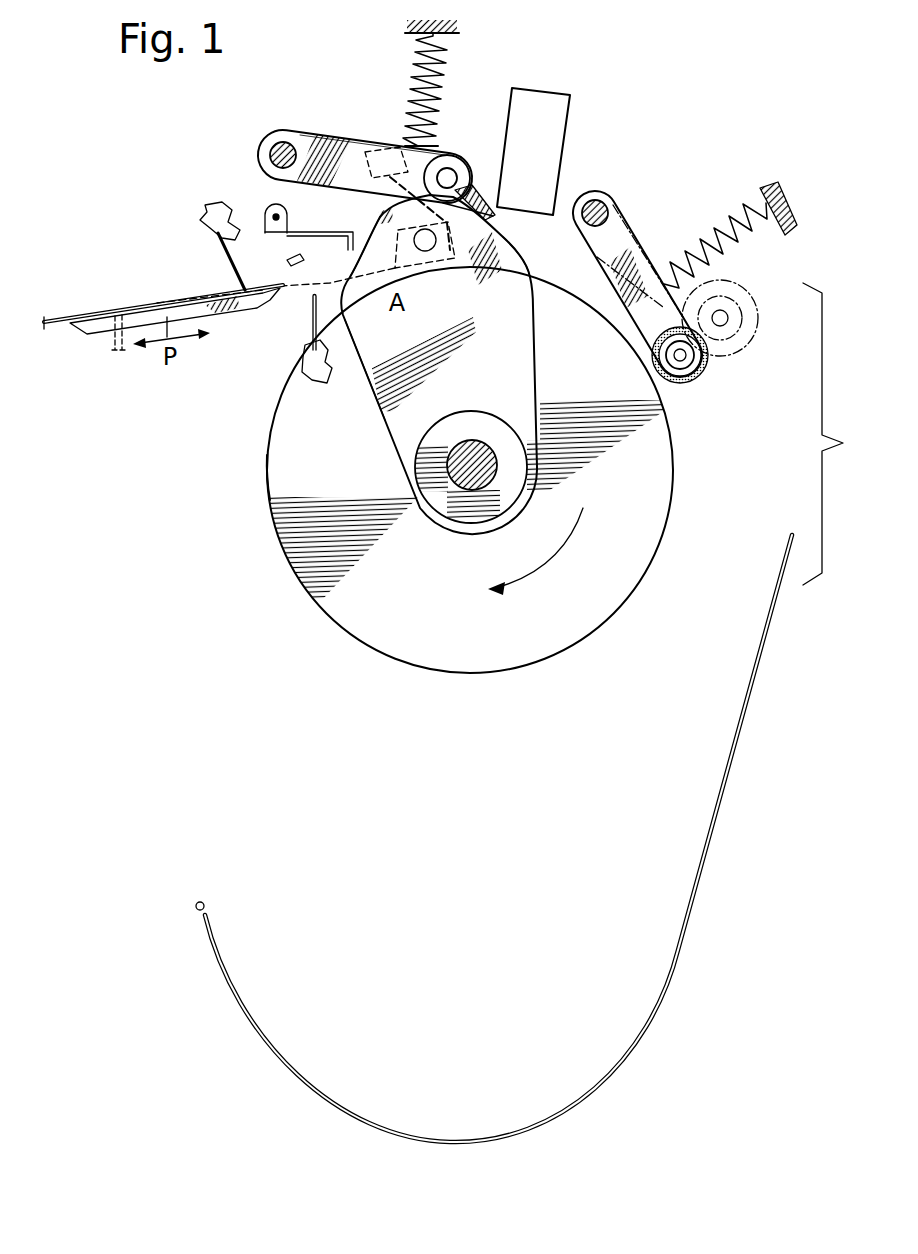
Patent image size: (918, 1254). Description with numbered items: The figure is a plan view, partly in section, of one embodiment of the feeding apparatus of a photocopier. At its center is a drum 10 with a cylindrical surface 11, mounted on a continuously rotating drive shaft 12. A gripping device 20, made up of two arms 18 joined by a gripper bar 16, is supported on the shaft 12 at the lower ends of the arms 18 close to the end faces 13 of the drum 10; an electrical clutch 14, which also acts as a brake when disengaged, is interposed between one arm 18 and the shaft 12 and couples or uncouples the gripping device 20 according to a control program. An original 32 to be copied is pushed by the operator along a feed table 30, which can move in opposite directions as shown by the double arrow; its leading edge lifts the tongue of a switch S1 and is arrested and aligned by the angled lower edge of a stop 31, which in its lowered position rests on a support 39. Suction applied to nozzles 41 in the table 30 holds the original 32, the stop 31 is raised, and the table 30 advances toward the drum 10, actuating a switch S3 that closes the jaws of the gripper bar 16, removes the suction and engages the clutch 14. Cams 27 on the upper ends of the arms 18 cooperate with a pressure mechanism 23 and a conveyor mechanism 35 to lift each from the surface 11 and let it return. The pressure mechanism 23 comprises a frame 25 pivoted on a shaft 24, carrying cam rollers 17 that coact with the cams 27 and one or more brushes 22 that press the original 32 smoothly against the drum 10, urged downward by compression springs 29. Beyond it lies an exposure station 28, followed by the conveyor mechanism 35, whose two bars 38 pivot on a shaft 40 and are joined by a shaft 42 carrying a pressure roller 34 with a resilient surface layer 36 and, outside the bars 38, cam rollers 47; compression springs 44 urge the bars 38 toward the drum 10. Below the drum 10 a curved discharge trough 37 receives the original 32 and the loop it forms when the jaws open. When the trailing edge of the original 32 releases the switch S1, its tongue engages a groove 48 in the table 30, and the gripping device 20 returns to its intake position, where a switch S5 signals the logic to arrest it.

The drum 10 is at (322, 592).
The cylindrical surface 11 is at (266, 481).
The drive shaft 12 is at (452, 452).
The end faces 13 is at (645, 548).
The electrical clutch 14 is at (492, 425).
The gripper bar 16 is at (430, 272).
The cam rollers 17 is at (462, 168).
The arms 18 is at (535, 370).
The gripping device 20 is at (382, 421).
The brushes 22 is at (482, 200).
The pressure mechanism 23 is at (370, 130).
The shaft 24 is at (272, 143).
The frame 25 is at (318, 138).
The cams 27 is at (372, 243).
The exposure station 28 is at (568, 138).
The compression springs 29 is at (441, 55).
The feed table 30 is at (88, 334).
The stop 31 is at (351, 243).
The original 32 is at (62, 318).
The pressure roller 34 is at (728, 360).
The conveyor mechanism 35 is at (652, 244).
The resilient surface layer 36 is at (703, 372).
The discharge trough 37 is at (734, 752).
The bars 38 is at (598, 262).
The support 39 is at (288, 261).
The shaft 40 is at (596, 192).
The nozzles 41 is at (118, 352).
The shaft 42 is at (673, 352).
The compression springs 44 is at (745, 250).
The cam rollers 47 is at (689, 375).
The groove 48 is at (190, 298).
The switch S1 is at (204, 215).
The switch S3 is at (303, 367).
The switch S5 is at (383, 148).